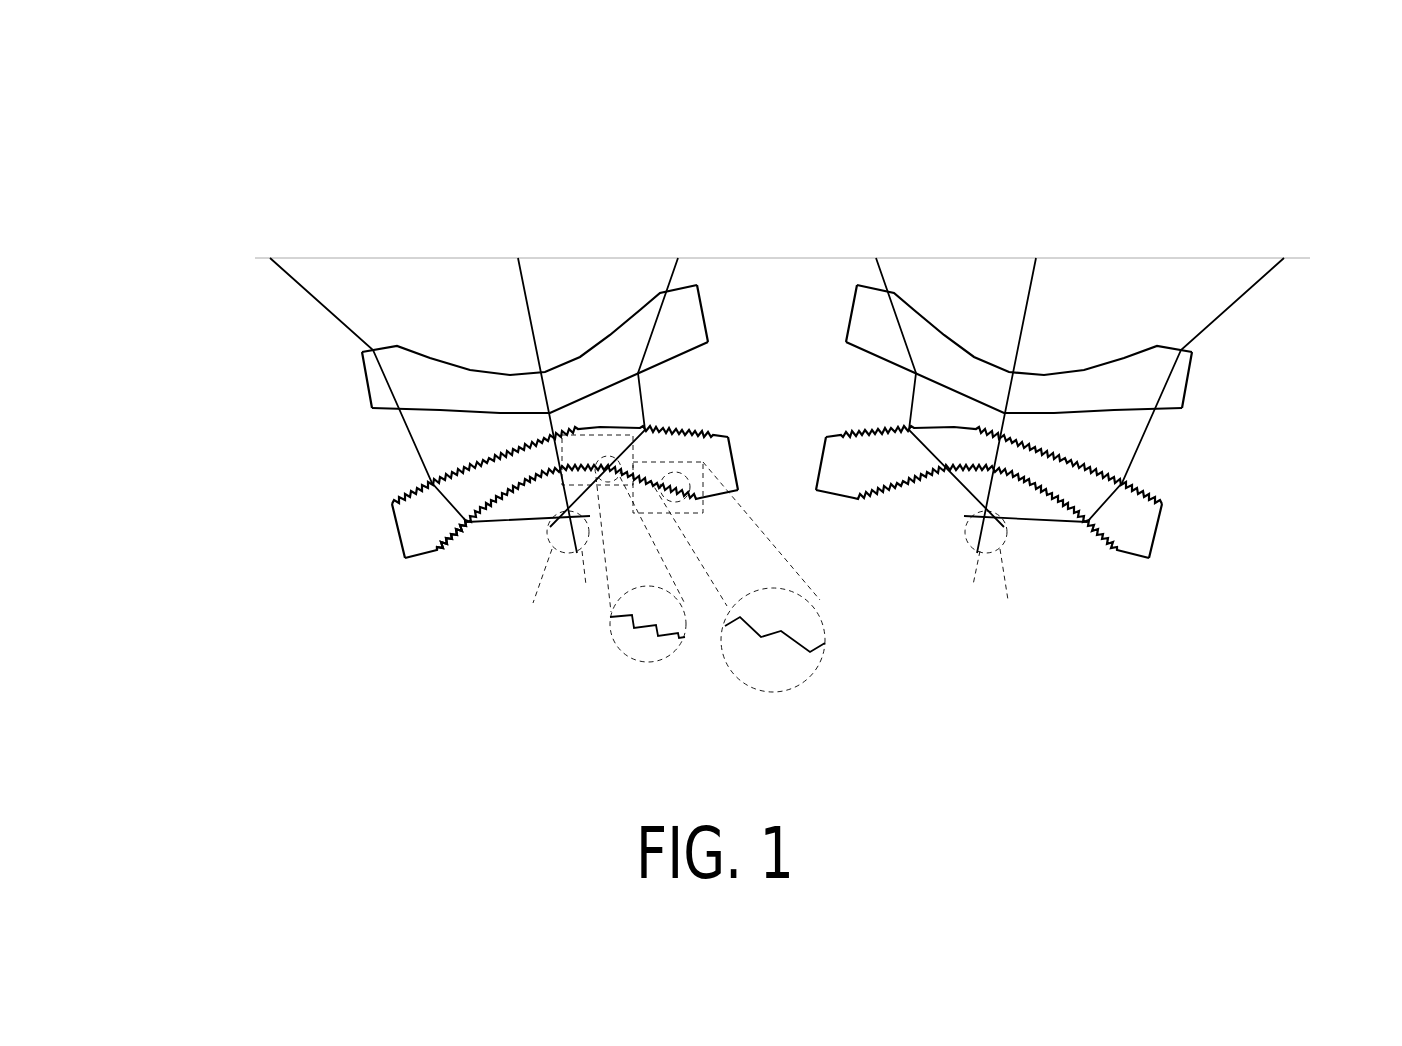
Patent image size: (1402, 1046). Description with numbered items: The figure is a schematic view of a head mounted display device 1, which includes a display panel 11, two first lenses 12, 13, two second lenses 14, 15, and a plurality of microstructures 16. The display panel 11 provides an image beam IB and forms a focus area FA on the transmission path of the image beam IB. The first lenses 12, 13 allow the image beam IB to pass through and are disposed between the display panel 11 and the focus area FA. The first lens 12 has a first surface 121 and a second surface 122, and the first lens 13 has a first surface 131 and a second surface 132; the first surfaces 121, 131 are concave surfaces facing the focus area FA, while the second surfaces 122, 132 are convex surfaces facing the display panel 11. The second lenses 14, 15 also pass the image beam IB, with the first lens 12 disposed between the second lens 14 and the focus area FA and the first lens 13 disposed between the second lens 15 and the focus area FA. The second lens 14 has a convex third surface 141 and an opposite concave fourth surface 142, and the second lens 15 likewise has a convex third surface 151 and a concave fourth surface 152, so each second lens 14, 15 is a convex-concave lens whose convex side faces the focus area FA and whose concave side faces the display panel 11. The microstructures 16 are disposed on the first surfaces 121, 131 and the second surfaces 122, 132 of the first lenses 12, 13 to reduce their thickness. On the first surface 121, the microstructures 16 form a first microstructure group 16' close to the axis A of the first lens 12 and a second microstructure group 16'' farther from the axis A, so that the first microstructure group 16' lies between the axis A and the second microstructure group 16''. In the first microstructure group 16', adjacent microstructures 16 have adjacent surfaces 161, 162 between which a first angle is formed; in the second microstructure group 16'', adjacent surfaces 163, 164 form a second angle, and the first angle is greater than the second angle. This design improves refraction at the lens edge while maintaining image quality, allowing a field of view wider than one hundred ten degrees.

The head mounted display device 1 is at (1197, 158).
The display panel 11 is at (300, 258).
The first lens 12 is at (469, 509).
The first surface 121 is at (415, 558).
The second surface 122 is at (395, 500).
The first lens 13 is at (1087, 512).
The first surface 131 is at (1152, 560).
The second surface 132 is at (1164, 500).
The second lens 14 is at (454, 377).
The third surface 141 is at (376, 412).
The fourth surface 142 is at (360, 355).
The second lens 15 is at (1102, 378).
The third surface 151 is at (1180, 412).
The fourth surface 152 is at (1194, 355).
The microstructures 16 is at (454, 577).
The first microstructure group 16' is at (660, 492).
The second microstructure group 16'' is at (726, 534).
The surface 161 is at (638, 628).
The surface 162 is at (657, 628).
The surface 163 is at (766, 641).
The surface 164 is at (778, 641).
The axis A is at (518, 258).
The image beam IB is at (335, 318).
The focus area FA is at (776, 581).